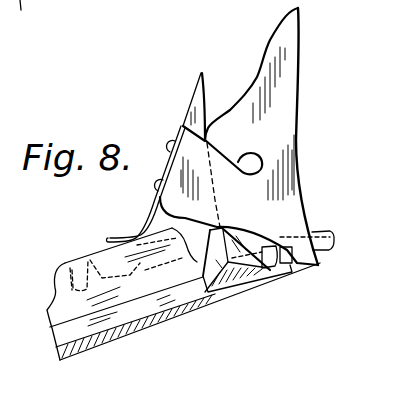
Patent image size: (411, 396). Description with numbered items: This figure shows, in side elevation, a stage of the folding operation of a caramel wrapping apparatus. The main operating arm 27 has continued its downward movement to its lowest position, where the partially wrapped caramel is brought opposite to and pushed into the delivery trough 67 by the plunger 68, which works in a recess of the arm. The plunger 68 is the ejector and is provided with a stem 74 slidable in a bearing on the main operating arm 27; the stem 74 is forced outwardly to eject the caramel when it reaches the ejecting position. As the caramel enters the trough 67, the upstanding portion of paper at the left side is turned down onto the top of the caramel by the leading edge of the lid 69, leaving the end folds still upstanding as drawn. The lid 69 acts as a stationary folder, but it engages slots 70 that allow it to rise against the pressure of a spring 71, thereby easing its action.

The main operating arm 27 is at (14, 21).
The delivery trough 67 is at (133, 331).
The plunger 68 is at (270, 270).
The lid 69 is at (100, 252).
The slots 70 is at (75, 263).
The spring 71 is at (152, 225).
The stem 74 is at (330, 250).